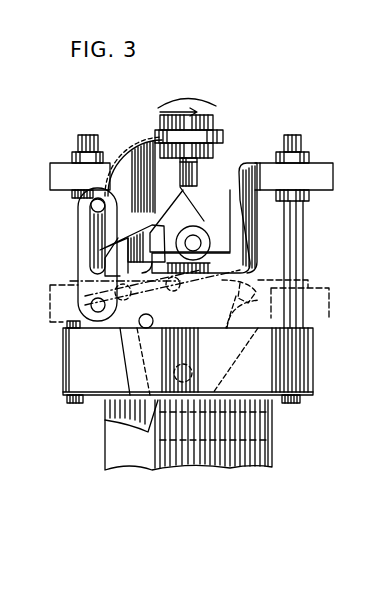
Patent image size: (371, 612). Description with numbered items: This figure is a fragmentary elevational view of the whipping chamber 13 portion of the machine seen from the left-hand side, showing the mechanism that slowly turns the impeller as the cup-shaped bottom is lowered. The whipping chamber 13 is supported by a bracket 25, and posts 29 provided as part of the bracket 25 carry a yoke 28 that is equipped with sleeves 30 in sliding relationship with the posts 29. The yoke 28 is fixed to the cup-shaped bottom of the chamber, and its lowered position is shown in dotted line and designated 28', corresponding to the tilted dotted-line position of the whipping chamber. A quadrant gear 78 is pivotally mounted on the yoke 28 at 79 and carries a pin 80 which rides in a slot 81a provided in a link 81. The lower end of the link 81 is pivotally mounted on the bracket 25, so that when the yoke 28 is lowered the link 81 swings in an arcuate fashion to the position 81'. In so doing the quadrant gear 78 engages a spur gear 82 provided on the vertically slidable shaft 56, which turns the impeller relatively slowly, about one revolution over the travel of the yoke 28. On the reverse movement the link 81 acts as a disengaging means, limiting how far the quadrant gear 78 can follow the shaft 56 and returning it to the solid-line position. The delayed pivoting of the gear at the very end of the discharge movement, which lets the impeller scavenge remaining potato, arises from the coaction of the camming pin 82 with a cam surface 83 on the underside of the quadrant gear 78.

The whipping chamber 13 is at (255, 450).
The bracket 25 is at (63, 380).
The yoke 28 is at (204, 174).
The lower position of the yoke 28' is at (210, 332).
The posts 29 is at (300, 229).
The sleeves 30 is at (302, 150).
The shaft 56 is at (198, 176).
The quadrant gear 78 is at (150, 152).
The pivot 79 is at (196, 241).
The pin 80 is at (91, 206).
The link 81 is at (71, 258).
The slot 81a is at (84, 253).
The position of the link 81' is at (250, 288).
The spur gear 82 is at (220, 133).
The cam surface 83 is at (120, 243).